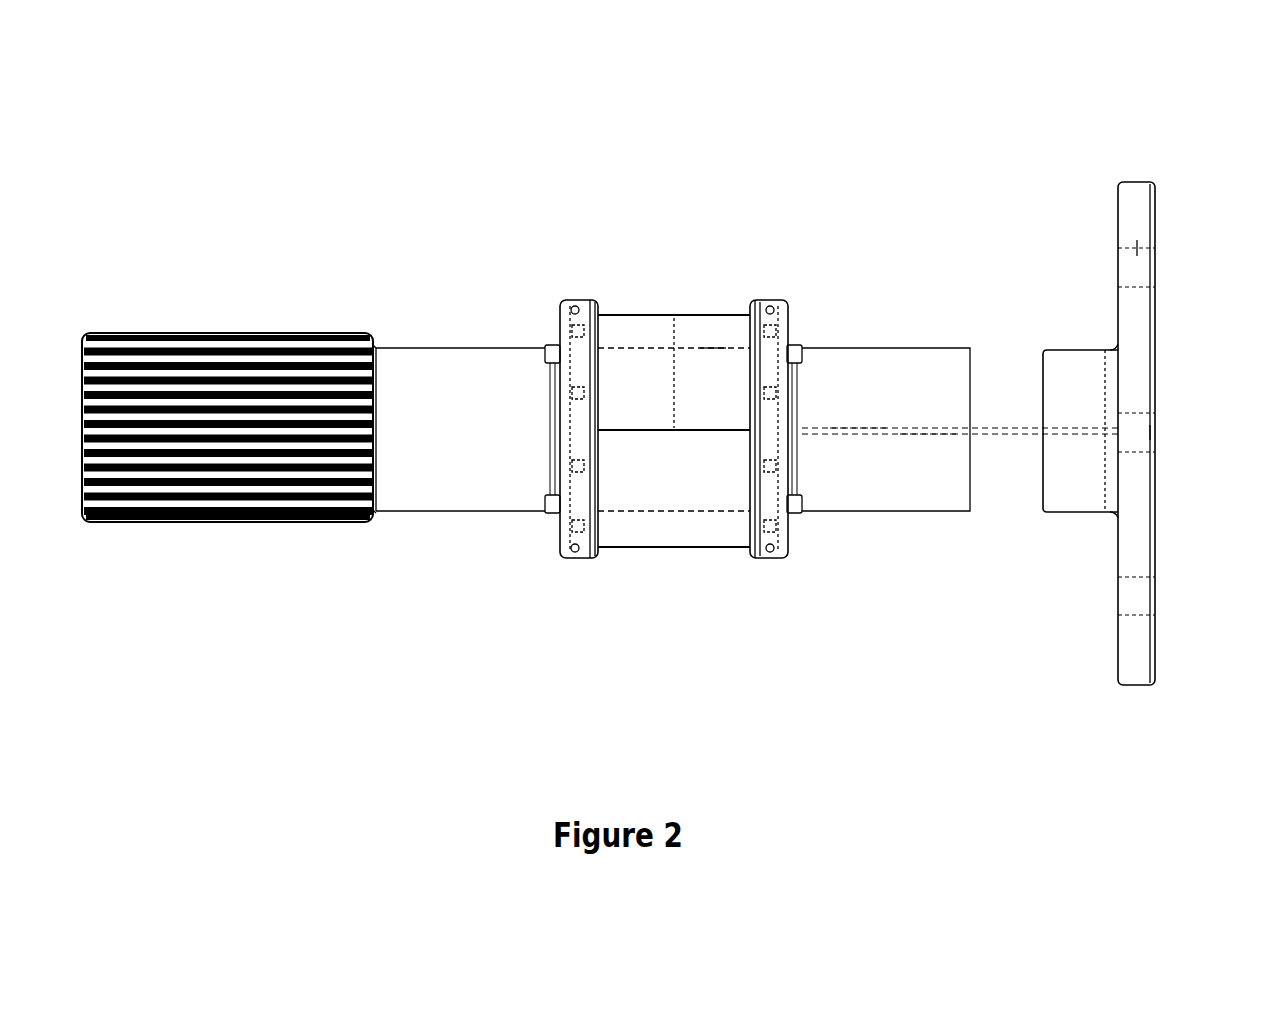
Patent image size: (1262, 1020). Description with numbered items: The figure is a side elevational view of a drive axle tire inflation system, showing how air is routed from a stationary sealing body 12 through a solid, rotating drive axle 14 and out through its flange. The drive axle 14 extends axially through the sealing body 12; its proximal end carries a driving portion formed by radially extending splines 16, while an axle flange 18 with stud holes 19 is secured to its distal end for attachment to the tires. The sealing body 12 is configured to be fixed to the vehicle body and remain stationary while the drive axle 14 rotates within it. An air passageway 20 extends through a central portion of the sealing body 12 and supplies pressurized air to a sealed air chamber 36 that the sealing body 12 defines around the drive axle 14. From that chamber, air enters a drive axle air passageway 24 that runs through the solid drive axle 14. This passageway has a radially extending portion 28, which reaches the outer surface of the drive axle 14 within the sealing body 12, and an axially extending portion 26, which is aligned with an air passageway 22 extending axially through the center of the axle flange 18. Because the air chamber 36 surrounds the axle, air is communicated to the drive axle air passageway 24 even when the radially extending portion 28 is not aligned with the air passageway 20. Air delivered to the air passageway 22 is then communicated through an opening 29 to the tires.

The sealing body 12 is at (562, 573).
The drive axle 14 is at (472, 127).
The radially extending splines 16 is at (278, 127).
The axle flange 18 is at (1080, 112).
The stud holes 19 is at (1190, 172).
The air passageway 20 is at (765, 32).
The air passageway 22 is at (1073, 437).
The drive axle air passageway 24 is at (858, 436).
The axially extending portion 26 is at (925, 436).
The radially extending portion 28 is at (595, 208).
The opening 29 is at (1152, 432).
The sealed air chamber 36 is at (783, 148).